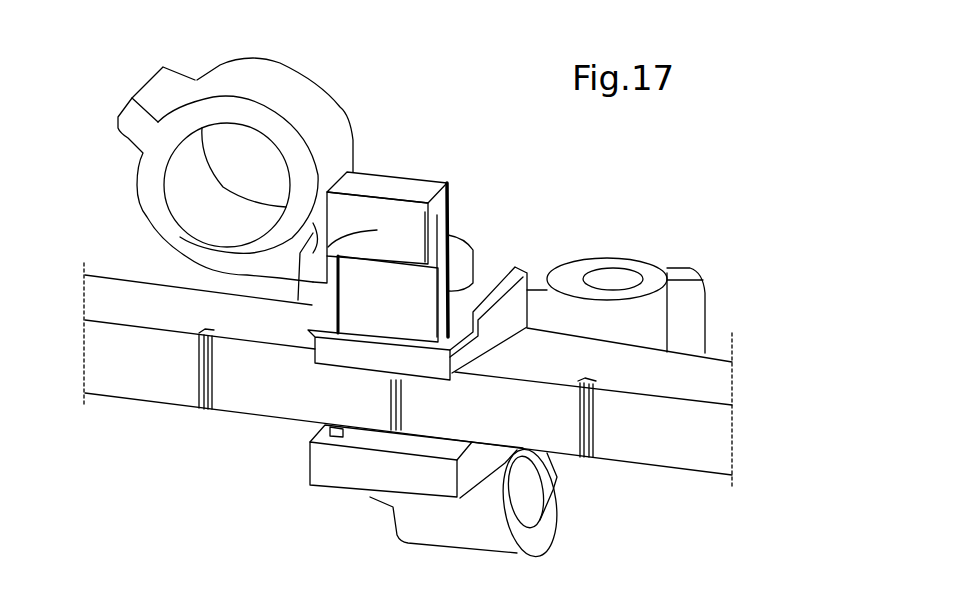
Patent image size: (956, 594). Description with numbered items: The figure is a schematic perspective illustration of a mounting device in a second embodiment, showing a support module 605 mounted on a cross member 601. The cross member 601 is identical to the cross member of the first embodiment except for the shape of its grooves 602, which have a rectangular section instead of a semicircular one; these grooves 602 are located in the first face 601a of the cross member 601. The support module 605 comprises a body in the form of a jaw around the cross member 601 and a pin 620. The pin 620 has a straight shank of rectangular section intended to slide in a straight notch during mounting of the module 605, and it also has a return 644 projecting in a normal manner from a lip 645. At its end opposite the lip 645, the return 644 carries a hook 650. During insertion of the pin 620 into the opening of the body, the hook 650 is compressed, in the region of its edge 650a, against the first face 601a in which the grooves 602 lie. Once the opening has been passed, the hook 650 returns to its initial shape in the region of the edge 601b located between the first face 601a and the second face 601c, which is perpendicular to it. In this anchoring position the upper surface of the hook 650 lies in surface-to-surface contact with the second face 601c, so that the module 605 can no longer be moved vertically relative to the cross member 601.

The cross member 601 is at (670, 443).
The first face 601a is at (137, 370).
The edge 601b is at (283, 440).
The second face 601c is at (602, 483).
The grooves 602 is at (208, 422).
The support module 605 is at (498, 175).
The pin 620 is at (385, 185).
The return 644 is at (435, 180).
The lip 645 is at (313, 282).
The hook 650 is at (432, 278).
The edge of the hook 650a is at (448, 248).